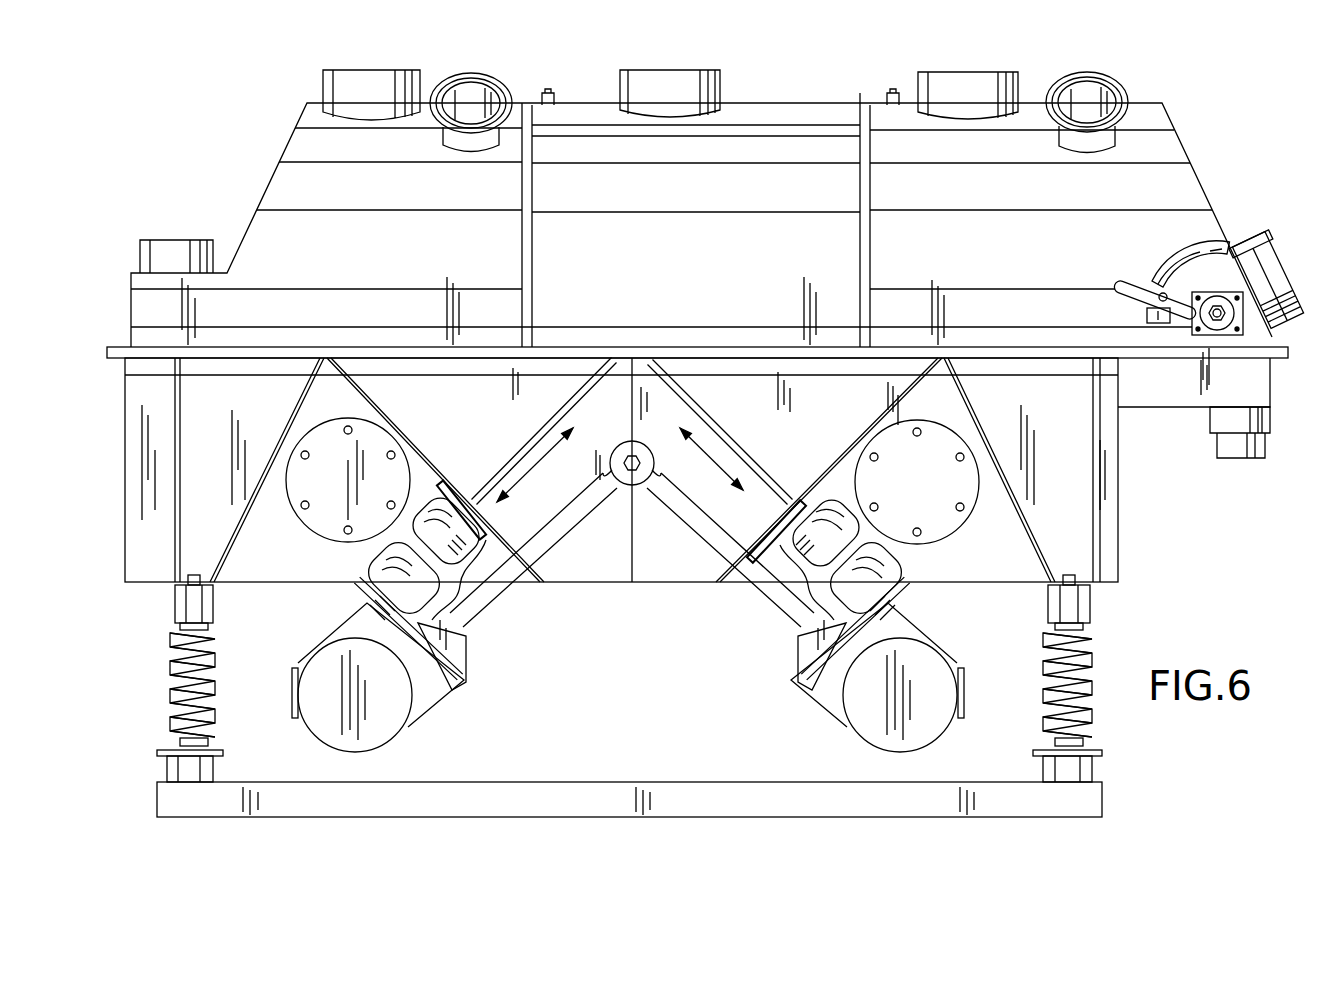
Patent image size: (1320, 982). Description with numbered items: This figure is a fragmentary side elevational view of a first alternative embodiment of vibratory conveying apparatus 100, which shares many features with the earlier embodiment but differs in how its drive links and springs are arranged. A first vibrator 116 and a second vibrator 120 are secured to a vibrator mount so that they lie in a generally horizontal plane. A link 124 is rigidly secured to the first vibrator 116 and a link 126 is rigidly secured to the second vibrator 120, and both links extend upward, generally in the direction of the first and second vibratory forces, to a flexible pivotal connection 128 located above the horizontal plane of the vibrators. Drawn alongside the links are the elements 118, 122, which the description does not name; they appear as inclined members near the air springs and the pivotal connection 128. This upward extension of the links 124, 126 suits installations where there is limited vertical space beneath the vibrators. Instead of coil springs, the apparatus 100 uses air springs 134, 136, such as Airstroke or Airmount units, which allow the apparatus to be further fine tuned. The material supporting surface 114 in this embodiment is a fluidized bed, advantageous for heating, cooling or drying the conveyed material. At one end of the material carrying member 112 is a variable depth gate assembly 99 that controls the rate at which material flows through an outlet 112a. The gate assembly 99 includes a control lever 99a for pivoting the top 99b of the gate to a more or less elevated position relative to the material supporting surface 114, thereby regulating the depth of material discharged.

The vibratory conveying apparatus 100 is at (772, 85).
The material carrying member 112 is at (834, 100).
The outlet 112a is at (1240, 450).
The material supporting surface 114 is at (702, 348).
The first vibrator 116 is at (420, 728).
The first guide rod 118 is at (521, 477).
The second vibrator 120 is at (830, 728).
The second guide rod 122 is at (725, 467).
The link 124 is at (495, 602).
The link 126 is at (757, 603).
The flexible pivotal connection 128 is at (625, 442).
The air spring 134 is at (435, 497).
The air spring 136 is at (823, 515).
The variable depth gate assembly 99 is at (1198, 248).
The control lever 99a is at (1116, 284).
The top of the gate 99b is at (1197, 254).